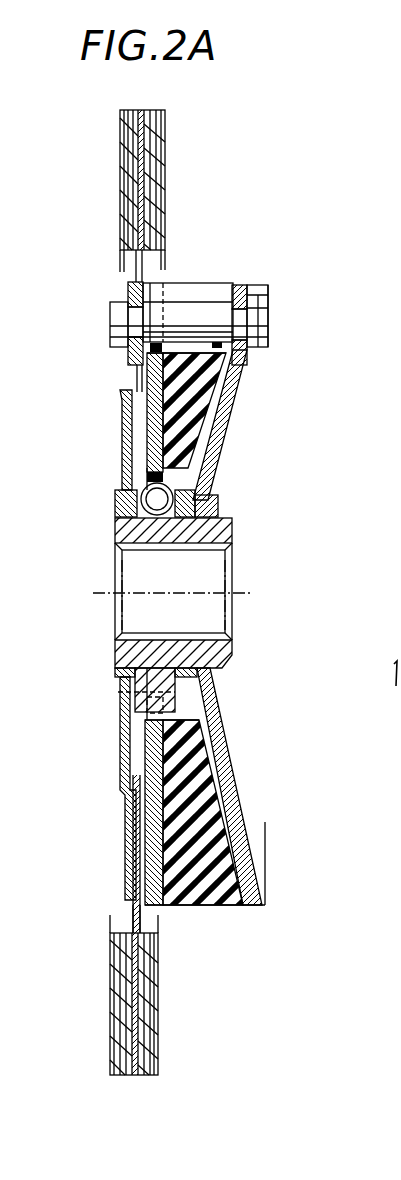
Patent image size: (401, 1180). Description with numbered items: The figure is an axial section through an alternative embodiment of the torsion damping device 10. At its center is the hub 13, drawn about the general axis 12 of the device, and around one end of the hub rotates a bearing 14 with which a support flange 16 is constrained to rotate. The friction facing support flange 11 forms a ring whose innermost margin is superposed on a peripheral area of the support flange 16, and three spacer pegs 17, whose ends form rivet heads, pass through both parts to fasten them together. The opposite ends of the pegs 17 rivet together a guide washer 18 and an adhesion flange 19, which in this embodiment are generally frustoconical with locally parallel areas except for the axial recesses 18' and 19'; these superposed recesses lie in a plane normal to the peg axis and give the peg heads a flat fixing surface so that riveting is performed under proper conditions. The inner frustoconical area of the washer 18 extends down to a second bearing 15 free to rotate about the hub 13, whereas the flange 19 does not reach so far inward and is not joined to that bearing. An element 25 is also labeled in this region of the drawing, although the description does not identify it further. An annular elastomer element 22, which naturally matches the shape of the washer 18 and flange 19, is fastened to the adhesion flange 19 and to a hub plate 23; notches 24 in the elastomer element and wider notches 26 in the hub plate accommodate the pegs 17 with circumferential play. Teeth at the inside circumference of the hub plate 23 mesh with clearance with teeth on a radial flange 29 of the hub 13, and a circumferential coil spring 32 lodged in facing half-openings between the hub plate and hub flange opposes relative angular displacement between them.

The device 10 is at (211, 208).
The friction facing support flange 11 is at (134, 262).
The general axis 12 is at (106, 592).
The hub 13 is at (236, 657).
The bearing 14 is at (113, 510).
The bearing 15 is at (221, 507).
The support flange 16 is at (127, 289).
The pegs 17 is at (270, 311).
The guide ring or washer 18 is at (241, 425).
The adhesion flange 19 is at (243, 668).
The axial recess 18' is at (275, 298).
The axial recess 19' is at (246, 288).
The annular elastomer material element 22 is at (199, 908).
The hub plate 23 is at (145, 413).
The notches 24 is at (238, 356).
The bolt 25 is at (193, 290).
The notches 26 is at (140, 348).
The radial projection or flange 29 is at (130, 691).
The coil spring 32 is at (145, 478).